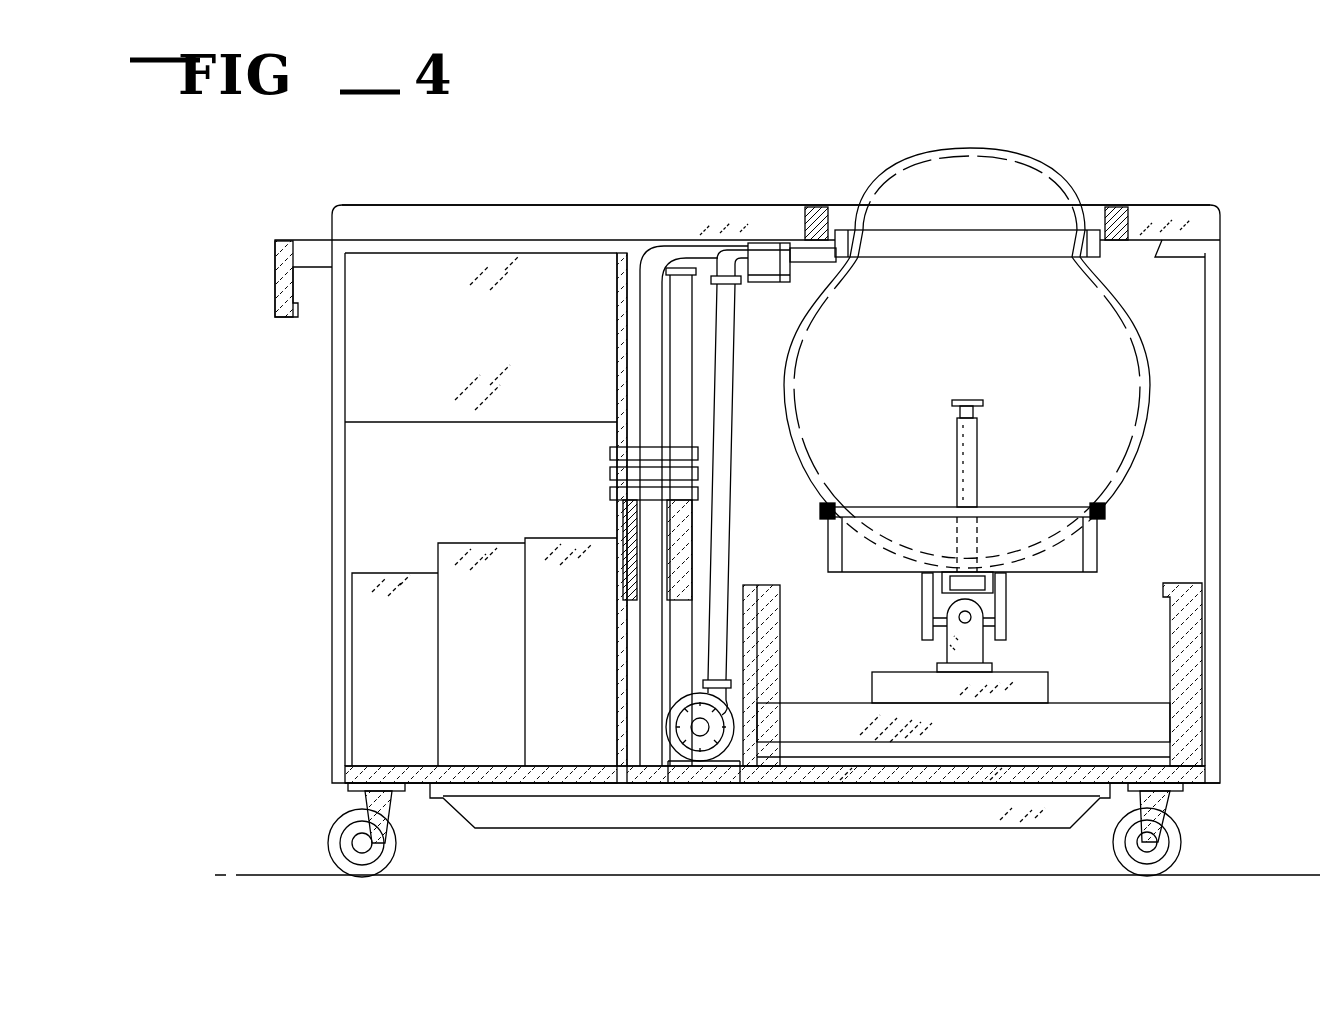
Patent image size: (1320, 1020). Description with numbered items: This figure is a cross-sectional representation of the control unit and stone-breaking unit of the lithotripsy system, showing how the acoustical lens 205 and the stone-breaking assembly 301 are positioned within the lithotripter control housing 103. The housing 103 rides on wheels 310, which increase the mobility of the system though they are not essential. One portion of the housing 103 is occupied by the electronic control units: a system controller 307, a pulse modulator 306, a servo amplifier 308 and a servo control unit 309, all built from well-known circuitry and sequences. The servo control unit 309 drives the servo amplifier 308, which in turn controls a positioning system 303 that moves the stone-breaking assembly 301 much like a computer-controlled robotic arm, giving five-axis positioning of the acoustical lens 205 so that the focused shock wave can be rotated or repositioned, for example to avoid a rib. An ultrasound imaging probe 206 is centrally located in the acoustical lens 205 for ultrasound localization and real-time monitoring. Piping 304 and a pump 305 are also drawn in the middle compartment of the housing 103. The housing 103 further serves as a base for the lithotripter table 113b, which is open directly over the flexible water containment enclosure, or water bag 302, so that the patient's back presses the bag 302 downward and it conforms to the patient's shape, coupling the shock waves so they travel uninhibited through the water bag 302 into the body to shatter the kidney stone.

The lithotripter control housing 103 is at (328, 168).
The lithotripter table 113b is at (598, 228).
The system controller 307 is at (558, 280).
The servo amplifier 308 is at (385, 632).
The servo control unit 309 is at (475, 692).
The pulse modulator 306 is at (570, 722).
The supply pipe 304 is at (660, 265).
The pump 305 is at (625, 707).
The acoustical lens 205 is at (897, 540).
The flexible water containment enclosure (waterbag) 302 is at (1115, 498).
The stone-breaking assembly 301 is at (1043, 508).
The ultrasound imaging probe 206 is at (977, 455).
The positioning system 303 is at (970, 647).
The wheels 310 is at (1168, 845).